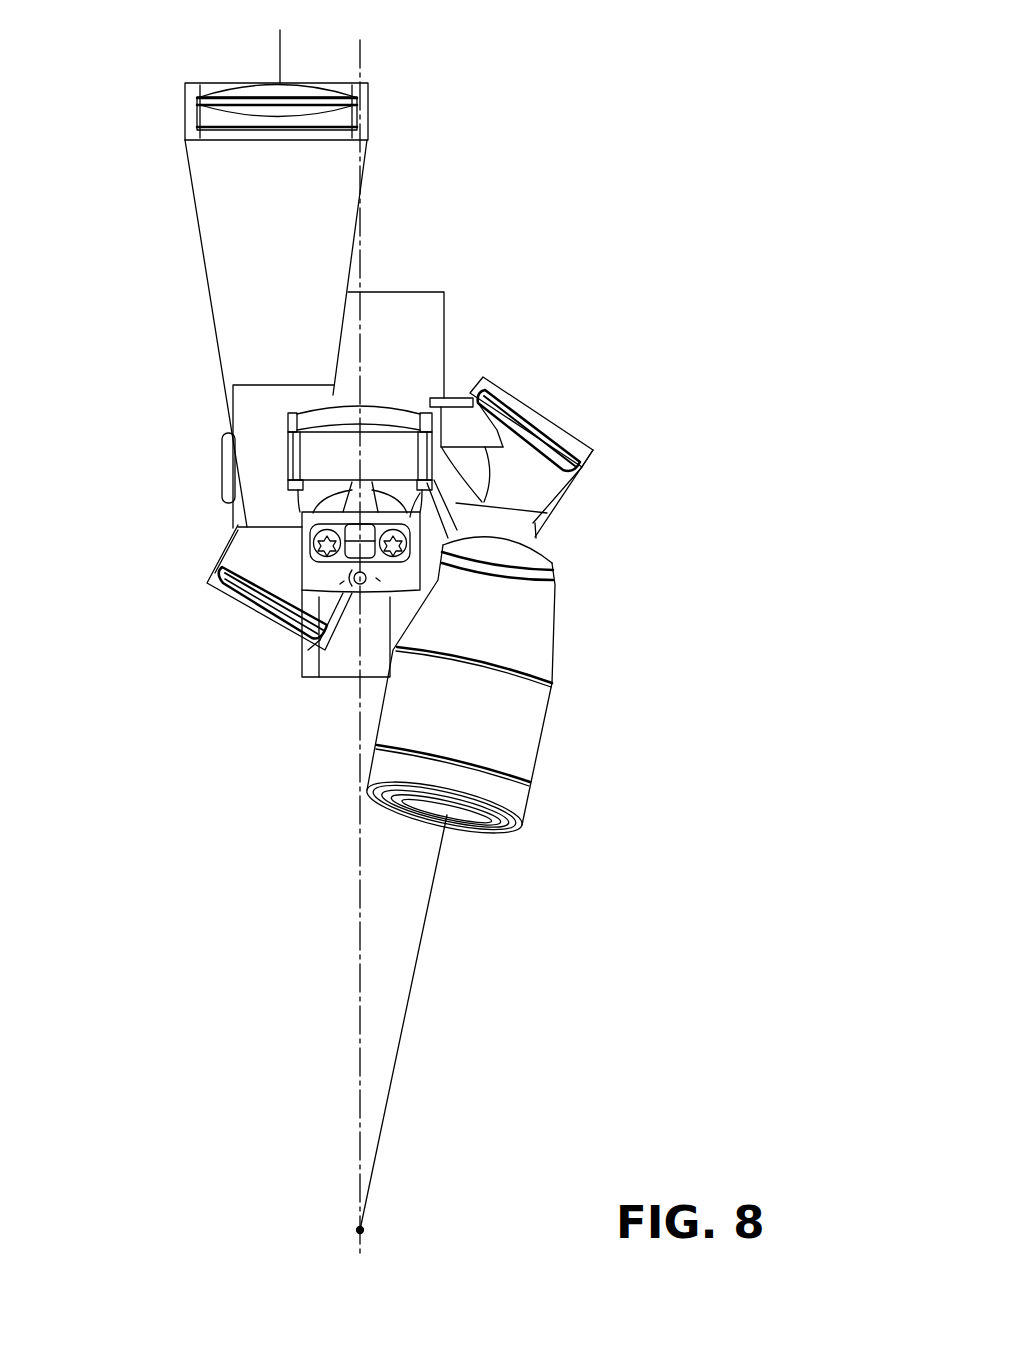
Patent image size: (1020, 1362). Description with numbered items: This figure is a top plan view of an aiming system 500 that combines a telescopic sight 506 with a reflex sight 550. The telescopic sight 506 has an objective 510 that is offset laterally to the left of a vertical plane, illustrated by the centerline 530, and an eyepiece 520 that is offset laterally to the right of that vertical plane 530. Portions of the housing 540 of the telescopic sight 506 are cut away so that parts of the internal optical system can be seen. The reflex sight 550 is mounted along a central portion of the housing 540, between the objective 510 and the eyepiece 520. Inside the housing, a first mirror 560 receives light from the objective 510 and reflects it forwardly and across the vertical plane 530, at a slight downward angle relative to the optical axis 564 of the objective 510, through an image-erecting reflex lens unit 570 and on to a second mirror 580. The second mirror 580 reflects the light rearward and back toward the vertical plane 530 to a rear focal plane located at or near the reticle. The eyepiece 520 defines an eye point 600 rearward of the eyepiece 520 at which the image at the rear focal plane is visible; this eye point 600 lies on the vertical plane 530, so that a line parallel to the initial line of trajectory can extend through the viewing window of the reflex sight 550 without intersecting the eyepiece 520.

The aiming system 500 is at (580, 345).
The telescopic sight 506 is at (199, 305).
The objective 510 is at (207, 121).
The eyepiece 520 is at (477, 812).
The vertical plane (centerline) 530 is at (372, 254).
The housing 540 is at (533, 623).
The reflex sight 550 is at (396, 455).
The first mirror 560 is at (250, 592).
The optical axis 564 is at (278, 52).
The image-erecting reflex lens unit 570 is at (433, 512).
The second mirror 580 is at (547, 420).
The eye point 600 is at (392, 1240).